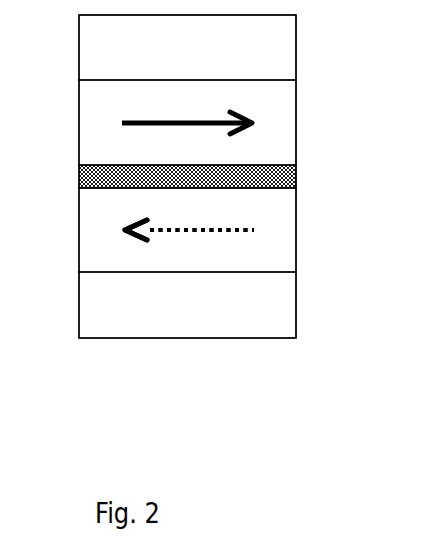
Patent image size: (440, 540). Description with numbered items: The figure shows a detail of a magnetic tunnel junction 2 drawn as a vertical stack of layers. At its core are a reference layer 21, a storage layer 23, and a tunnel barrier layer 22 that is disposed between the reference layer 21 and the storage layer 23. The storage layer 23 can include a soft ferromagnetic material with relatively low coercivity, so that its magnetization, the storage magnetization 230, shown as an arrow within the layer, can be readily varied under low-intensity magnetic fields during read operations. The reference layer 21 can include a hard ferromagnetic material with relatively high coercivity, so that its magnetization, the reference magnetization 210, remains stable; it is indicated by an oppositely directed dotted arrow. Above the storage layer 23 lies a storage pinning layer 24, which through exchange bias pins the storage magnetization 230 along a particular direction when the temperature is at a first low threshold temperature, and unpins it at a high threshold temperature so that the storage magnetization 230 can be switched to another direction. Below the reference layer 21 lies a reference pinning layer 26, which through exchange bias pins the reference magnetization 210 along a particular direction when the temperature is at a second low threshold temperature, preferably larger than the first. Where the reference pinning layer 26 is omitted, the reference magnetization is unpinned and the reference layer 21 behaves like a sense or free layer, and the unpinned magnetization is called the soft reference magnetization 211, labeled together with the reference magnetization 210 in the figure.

The magnetic tunnel junction 2 is at (48, 15).
The storage pinning layer 24 is at (283, 50).
The storage layer 23 is at (283, 124).
The storage magnetization 230 is at (187, 111).
The tunnel barrier layer 22 is at (296, 177).
The reference layer 21 is at (284, 228).
The reference magnetization 210 is at (189, 218).
The soft reference magnetization 211 is at (195, 218).
The reference pinning layer 26 is at (284, 302).